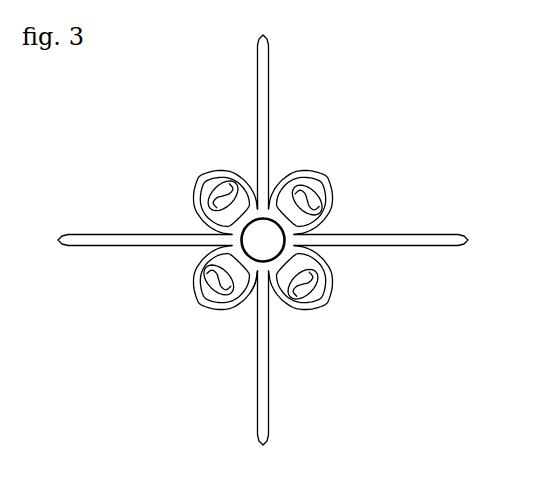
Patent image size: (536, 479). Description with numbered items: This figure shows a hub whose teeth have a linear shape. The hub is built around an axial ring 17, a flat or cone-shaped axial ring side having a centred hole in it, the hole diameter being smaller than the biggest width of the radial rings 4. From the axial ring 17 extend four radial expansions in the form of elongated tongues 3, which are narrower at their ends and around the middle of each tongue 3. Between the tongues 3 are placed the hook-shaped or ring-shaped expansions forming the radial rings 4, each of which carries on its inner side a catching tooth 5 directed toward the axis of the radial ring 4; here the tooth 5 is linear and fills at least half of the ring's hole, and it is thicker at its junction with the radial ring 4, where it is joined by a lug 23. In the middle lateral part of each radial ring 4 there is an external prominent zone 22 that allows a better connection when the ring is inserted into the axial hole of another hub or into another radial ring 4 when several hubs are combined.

The tongues 3 is at (453, 227).
The radial rings 4 is at (228, 217).
The linear catching tooth 5 is at (313, 263).
The axial ring 17 is at (250, 200).
The external prominent zone 22 is at (260, 299).
The lug 23 is at (199, 184).